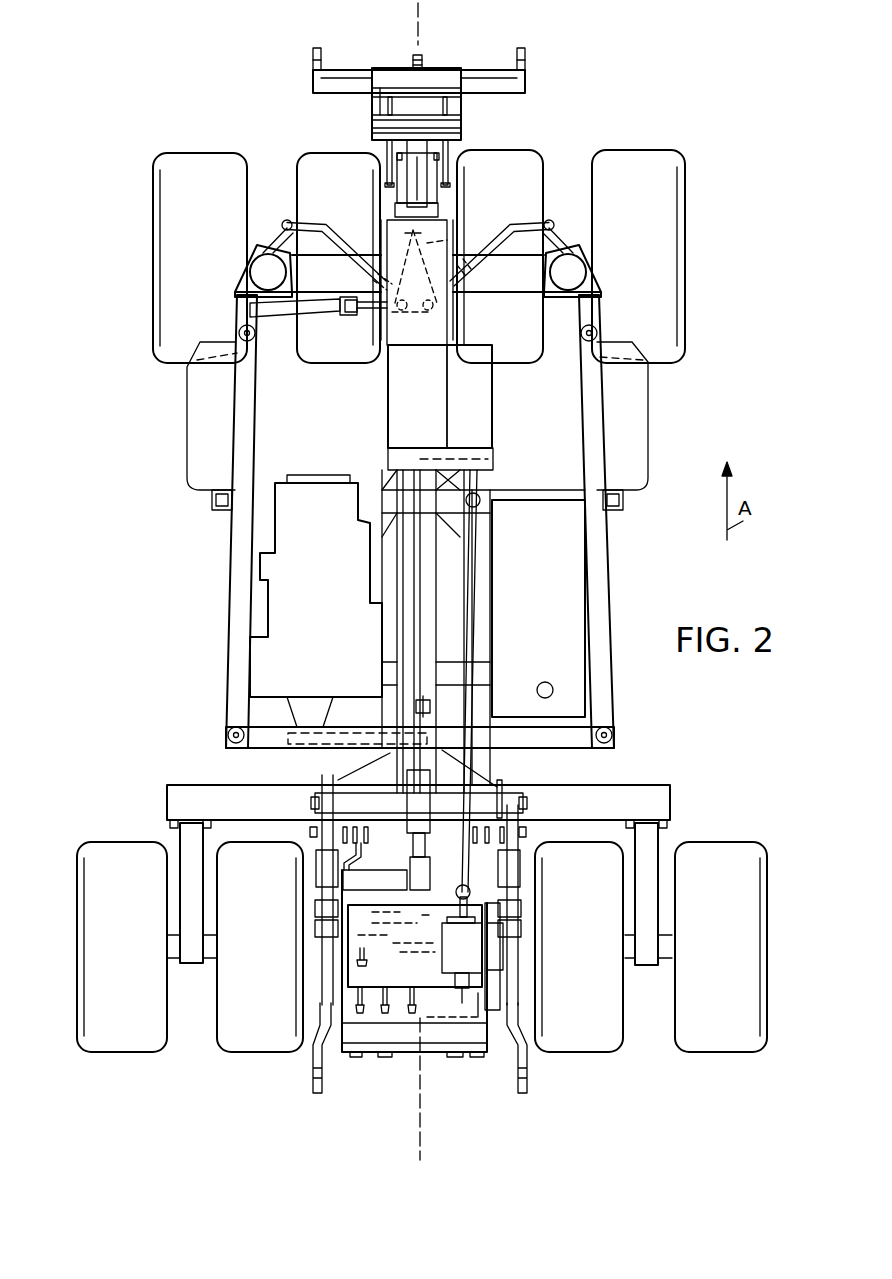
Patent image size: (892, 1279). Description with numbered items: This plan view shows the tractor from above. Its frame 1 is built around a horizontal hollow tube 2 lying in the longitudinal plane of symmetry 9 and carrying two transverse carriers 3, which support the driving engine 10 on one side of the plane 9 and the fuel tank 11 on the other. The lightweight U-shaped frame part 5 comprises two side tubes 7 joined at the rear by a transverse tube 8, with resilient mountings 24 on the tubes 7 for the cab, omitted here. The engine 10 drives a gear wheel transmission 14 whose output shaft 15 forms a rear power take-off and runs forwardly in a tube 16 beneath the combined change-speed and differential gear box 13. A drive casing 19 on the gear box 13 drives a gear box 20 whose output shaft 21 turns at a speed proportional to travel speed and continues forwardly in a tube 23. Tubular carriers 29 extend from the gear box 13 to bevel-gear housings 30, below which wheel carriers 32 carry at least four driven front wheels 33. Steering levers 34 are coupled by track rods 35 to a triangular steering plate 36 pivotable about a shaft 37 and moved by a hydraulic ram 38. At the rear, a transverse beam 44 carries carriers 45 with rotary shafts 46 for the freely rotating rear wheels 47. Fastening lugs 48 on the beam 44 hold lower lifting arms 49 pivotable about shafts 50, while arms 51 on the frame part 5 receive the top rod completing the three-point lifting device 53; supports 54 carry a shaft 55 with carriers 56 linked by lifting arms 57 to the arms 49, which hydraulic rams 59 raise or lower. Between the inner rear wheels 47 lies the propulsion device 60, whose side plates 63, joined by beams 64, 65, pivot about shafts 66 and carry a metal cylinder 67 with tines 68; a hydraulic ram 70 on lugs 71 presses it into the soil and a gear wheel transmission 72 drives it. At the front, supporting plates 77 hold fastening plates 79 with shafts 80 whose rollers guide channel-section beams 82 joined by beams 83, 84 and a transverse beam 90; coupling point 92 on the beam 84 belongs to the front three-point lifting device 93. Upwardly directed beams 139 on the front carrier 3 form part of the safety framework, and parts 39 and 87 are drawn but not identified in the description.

The frame 1 is at (624, 680).
The hollow tube 2 is at (430, 618).
The carriers 3 is at (268, 500).
The U-shaped frame part 5 is at (228, 619).
The tubes 7 is at (242, 427).
The tube 8 is at (510, 735).
The vertical central longitudinal plane 9 is at (412, 17).
The driving engine 10 is at (295, 583).
The fuel tank 11 is at (569, 616).
The combined change speed and differential gear box 13 is at (402, 412).
The gear wheel transmission 14 is at (291, 756).
The output shaft 15 is at (400, 760).
The tube 16 is at (407, 618).
The drive casing 19 is at (473, 393).
The gear box 20 is at (490, 458).
The output shaft 21 is at (472, 477).
The tube 23 is at (473, 580).
The resilient mountings 24 is at (237, 335).
The tubular carriers 29 is at (350, 277).
The housings of gear wheel transmission 30 is at (257, 267).
The wheel carriers 32 is at (250, 237).
The front wheels 33 is at (210, 173).
The levers 34 is at (285, 225).
The track rods 35 is at (311, 222).
The triangular steering plate 36 is at (455, 237).
The pivotal shaft 37 is at (373, 237).
The hydraulic ram 38 is at (317, 313).
The mounting block 39 is at (422, 705).
The beam 44 is at (662, 772).
The carriers 45 is at (185, 870).
The rotary shaft 46 is at (175, 945).
The rear wheels 47 is at (235, 1032).
The fastening lugs 48 is at (315, 833).
The lower lifting arms 49 is at (327, 965).
The pivotal shafts 50 is at (317, 837).
The arms 51 is at (428, 802).
The three-point lifting device 53 is at (311, 1059).
The supports 54 is at (503, 780).
The shaft 55 is at (527, 802).
The carrier 56 is at (318, 857).
The lifting arm 57 is at (313, 923).
The hydraulic ram 59 is at (318, 877).
The propulsion device 60 is at (410, 1060).
The vertical plates 63 is at (343, 988).
The beam 64 is at (455, 1037).
The beam 65 is at (398, 858).
The pivotal shafts 66 is at (385, 872).
The metal cylinder 67 is at (363, 972).
The tines 68 is at (383, 1013).
The hydraulic ram 70 is at (412, 827).
The lugs 71 is at (450, 1003).
The gear wheel transmission 72 is at (443, 949).
The supporting plates 77 is at (420, 192).
The fastening plates 79 is at (398, 115).
The shafts 80 is at (393, 125).
The channel-section beams 82 is at (387, 107).
The beam 83 is at (452, 133).
The beam 84 is at (393, 67).
The piston rod 87 is at (420, 193).
The horizontal transverse beam 90 is at (497, 53).
The coupling point 92 is at (420, 57).
The three-point lifting device 93 is at (484, 117).
The upwardly directed beams 139 is at (212, 503).